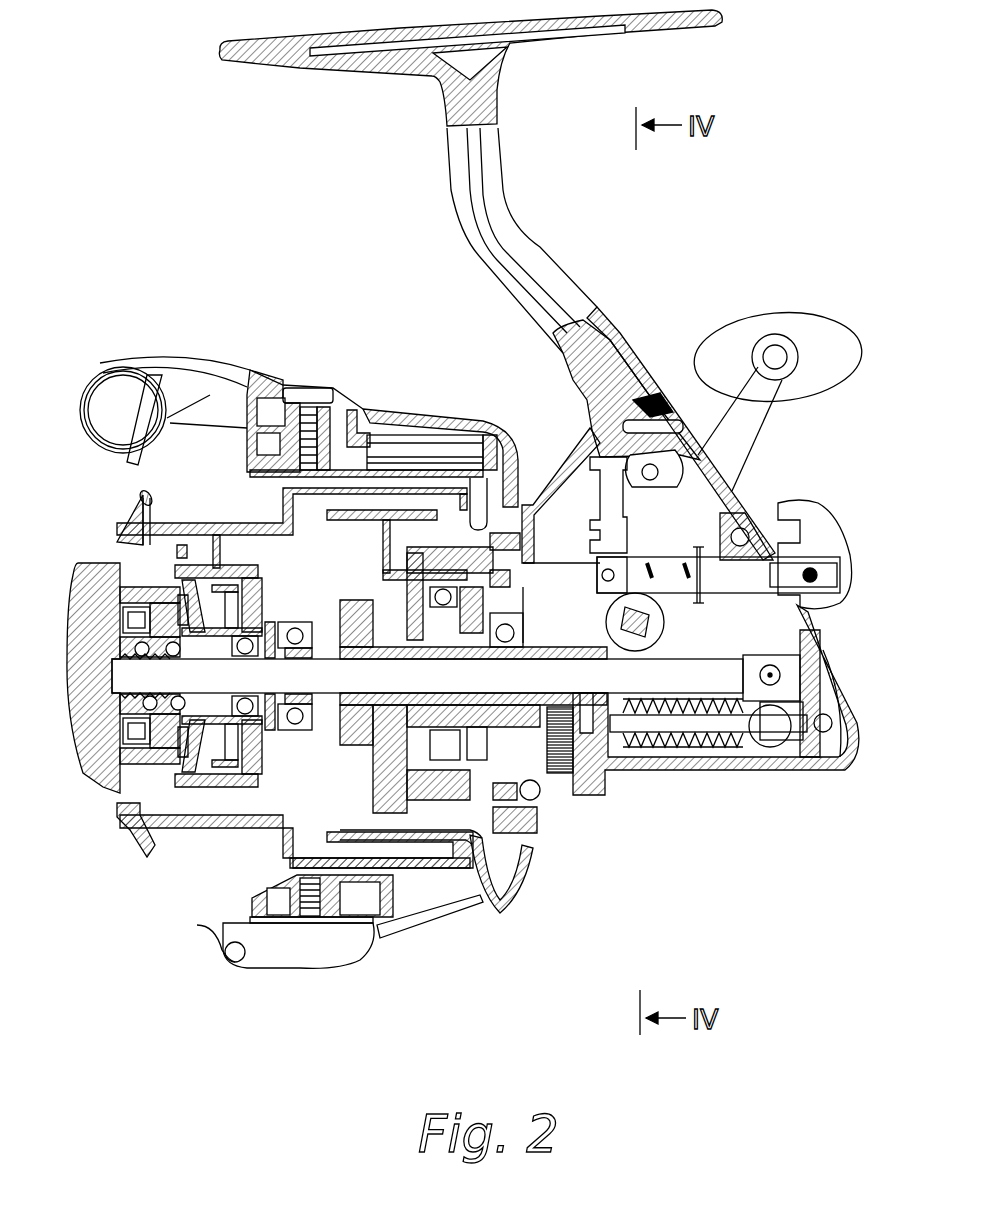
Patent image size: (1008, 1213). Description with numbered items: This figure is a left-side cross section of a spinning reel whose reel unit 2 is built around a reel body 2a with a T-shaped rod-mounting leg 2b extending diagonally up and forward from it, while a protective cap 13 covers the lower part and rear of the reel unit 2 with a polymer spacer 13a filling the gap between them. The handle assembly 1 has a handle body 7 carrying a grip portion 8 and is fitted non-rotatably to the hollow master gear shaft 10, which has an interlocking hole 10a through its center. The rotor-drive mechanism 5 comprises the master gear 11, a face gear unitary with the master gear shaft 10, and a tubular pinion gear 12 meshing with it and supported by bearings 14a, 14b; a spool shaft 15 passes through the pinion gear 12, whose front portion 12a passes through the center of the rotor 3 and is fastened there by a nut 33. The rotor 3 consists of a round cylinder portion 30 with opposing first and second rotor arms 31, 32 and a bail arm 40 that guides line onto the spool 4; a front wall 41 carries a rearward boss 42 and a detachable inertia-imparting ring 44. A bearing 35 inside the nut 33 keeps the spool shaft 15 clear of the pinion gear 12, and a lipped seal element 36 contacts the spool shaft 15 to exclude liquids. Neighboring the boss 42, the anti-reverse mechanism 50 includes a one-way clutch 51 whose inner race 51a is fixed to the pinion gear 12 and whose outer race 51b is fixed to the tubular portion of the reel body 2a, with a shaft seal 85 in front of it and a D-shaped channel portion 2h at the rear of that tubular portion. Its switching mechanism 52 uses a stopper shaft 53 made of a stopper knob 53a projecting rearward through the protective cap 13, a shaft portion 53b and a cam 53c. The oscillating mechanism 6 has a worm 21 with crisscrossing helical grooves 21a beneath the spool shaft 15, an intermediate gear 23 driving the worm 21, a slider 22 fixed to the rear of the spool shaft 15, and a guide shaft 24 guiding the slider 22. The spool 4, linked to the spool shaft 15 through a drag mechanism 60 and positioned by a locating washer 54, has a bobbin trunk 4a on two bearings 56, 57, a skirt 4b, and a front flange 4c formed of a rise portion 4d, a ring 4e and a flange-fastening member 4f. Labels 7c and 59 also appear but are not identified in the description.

The handle assembly 1 is at (832, 330).
The reel unit 2 is at (807, 803).
The reel body 2a is at (653, 362).
The rod-mounting leg 2b is at (517, 199).
The channel portion 2h is at (510, 908).
The rotor 3 is at (515, 940).
The spool 4 is at (187, 840).
The bobbin trunk 4a is at (217, 528).
The skirt 4b is at (347, 400).
The front flange 4c is at (153, 495).
The rise portion 4d is at (150, 515).
The ring 4e is at (143, 505).
The flange-fastening member 4f is at (137, 540).
The rotor-drive mechanism 5 is at (503, 587).
The oscillating mechanism 6 is at (773, 750).
The handle body 7 is at (752, 428).
The handle shaft 7c is at (647, 665).
The grip portion 8 is at (770, 322).
The master gear shaft 10 is at (740, 655).
The interlocking hole 10a is at (740, 613).
The master gear 11 is at (757, 487).
The pinion gear 12 is at (555, 605).
The front portion of the pinion gear 12a is at (362, 613).
The protective cap 13 is at (787, 692).
The spacer 13a is at (750, 767).
The bearing 14a is at (530, 810).
The bearing 14b is at (597, 680).
The spool shaft 15 is at (623, 667).
The worm 21 is at (693, 743).
The helical grooves 21a is at (670, 747).
The slider 22 is at (837, 744).
The intermediate gear 23 is at (535, 690).
The guide shaft 24 is at (720, 757).
The round cylinder portion 30 is at (333, 912).
The first rotor arm 31 is at (383, 400).
The second rotor arm 32 is at (413, 900).
The nut 33 is at (377, 661).
The bearing 35 is at (340, 737).
The seal element 36 is at (305, 613).
The bail arm 40 is at (107, 460).
The front wall 41 is at (310, 795).
The boss 42 is at (362, 752).
The inertia-imparting ring 44 is at (385, 808).
The anti-reverse mechanism 50 is at (460, 858).
The one-way clutch 51 is at (447, 555).
The inner race 51a is at (365, 570).
The outer race 51b is at (430, 560).
The switching mechanism 52 is at (710, 520).
The stopper shaft 53 is at (667, 547).
The stopper knob 53a is at (815, 513).
The shaft portion 53b is at (672, 385).
The cam 53c is at (503, 585).
The locating washer 54 is at (315, 650).
The bearing 56 is at (233, 778).
The bearing 57 is at (250, 800).
The body flange 59 is at (563, 410).
The drag mechanism 60 is at (143, 835).
The shaft seal 85 is at (378, 795).